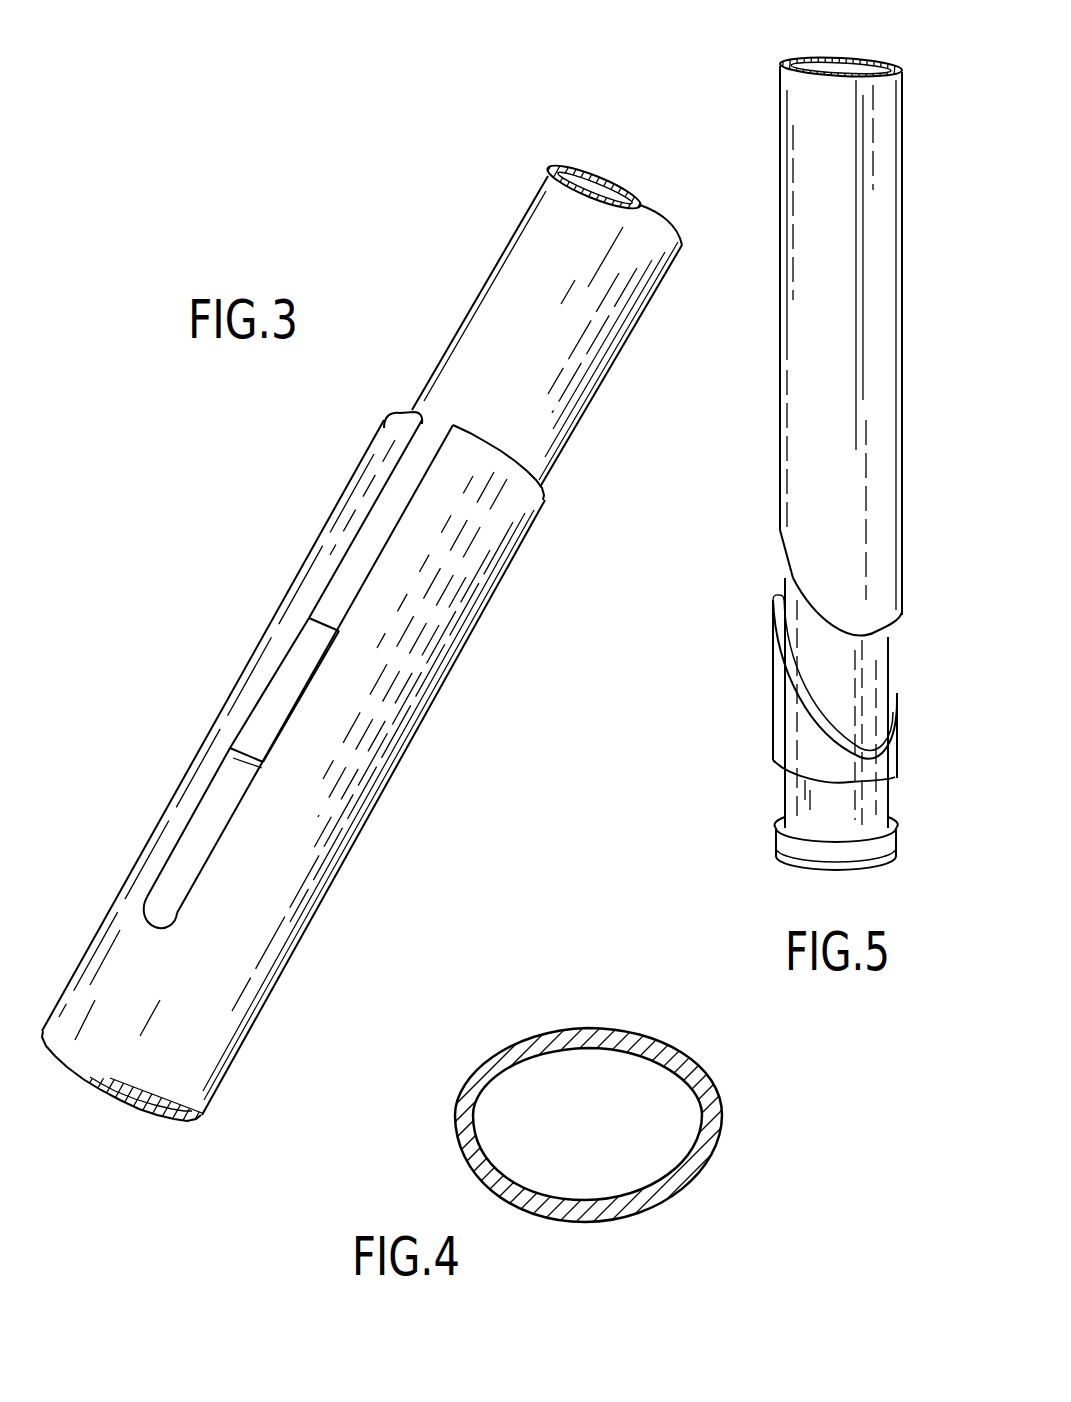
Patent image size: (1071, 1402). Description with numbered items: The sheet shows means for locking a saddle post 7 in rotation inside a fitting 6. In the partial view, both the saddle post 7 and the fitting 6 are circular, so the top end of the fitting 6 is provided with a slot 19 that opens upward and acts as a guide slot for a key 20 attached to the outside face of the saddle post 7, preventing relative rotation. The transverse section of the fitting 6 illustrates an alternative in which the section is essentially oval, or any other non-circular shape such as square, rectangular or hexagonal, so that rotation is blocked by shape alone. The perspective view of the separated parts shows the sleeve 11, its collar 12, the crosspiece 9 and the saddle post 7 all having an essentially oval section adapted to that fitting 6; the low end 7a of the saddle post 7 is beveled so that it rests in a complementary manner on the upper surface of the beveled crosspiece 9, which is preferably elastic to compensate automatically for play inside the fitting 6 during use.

In FIG. 3, the fitting 6 is at (390, 702).
In FIG. 4, the fitting 6 is at (690, 1173).
In FIG. 3, the saddle post 7 is at (512, 293).
In FIG. 5, the saddle post 7 is at (811, 342).
In FIG. 5, the bevelled end of inner tube 7a is at (795, 578).
In FIG. 5, the crosspiece 9 is at (787, 722).
In FIG. 5, the sleeve 11 is at (810, 798).
In FIG. 5, the collar 12 is at (800, 856).
In FIG. 3, the slot 19 is at (362, 552).
In FIG. 3, the key 20 is at (275, 693).